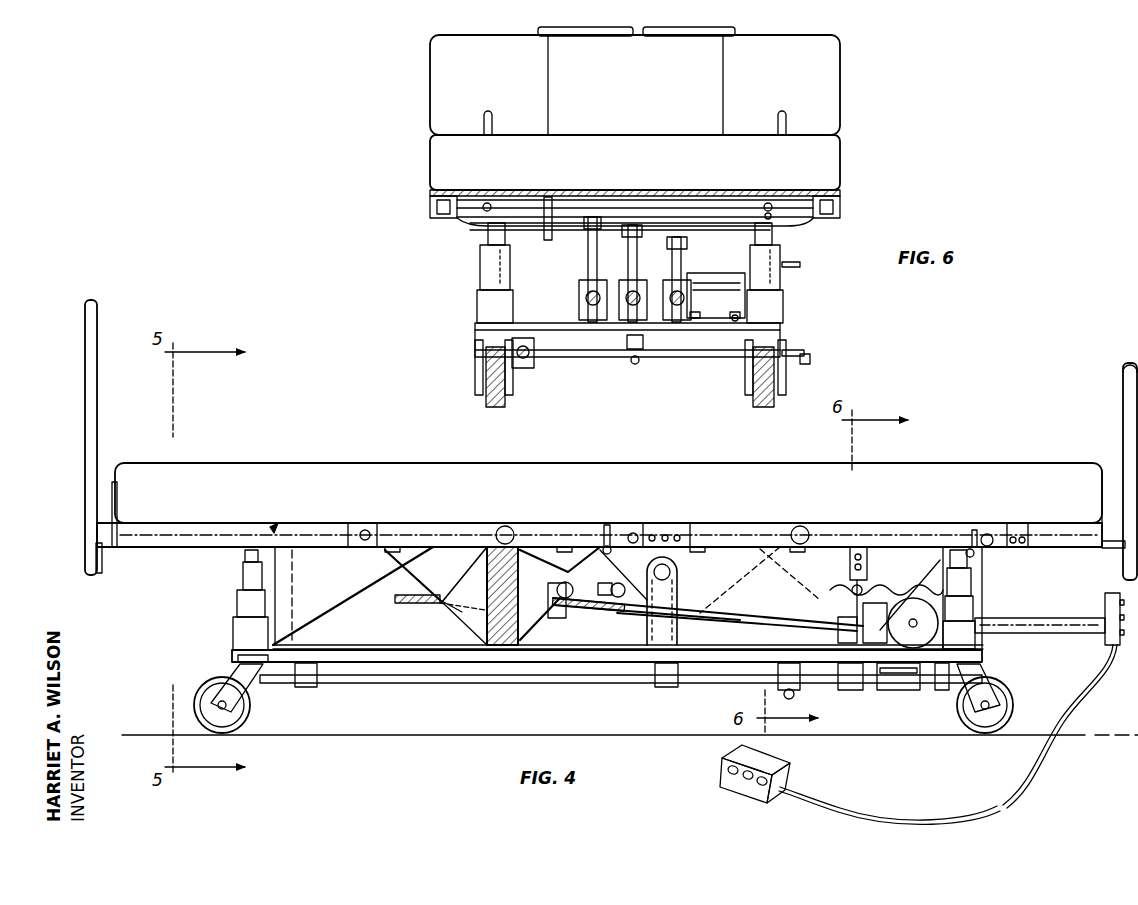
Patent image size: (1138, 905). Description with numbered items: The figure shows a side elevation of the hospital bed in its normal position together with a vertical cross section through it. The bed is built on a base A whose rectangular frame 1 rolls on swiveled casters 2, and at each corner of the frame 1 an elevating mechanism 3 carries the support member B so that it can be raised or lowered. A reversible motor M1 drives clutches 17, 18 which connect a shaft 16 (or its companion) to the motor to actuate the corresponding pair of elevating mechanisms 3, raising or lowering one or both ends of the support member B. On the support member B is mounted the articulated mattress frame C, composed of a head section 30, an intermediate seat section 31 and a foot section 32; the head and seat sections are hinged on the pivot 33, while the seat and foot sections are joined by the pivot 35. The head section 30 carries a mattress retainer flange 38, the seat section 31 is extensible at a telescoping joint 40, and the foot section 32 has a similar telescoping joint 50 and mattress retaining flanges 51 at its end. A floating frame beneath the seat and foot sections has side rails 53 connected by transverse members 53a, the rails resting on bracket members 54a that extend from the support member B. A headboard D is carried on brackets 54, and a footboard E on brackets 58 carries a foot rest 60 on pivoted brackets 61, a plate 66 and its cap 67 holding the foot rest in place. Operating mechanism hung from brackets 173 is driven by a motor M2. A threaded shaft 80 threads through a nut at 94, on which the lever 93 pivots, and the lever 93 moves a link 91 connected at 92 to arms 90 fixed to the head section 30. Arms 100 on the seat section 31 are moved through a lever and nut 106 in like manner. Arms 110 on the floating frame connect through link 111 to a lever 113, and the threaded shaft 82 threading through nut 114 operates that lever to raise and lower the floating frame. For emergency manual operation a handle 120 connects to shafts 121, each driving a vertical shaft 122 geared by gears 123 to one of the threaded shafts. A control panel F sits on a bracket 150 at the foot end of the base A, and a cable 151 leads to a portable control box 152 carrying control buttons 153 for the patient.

In FIG. 4, the rectangular frame 1 is at (396, 652).
In FIG. 4, the swiveled casters 2 is at (250, 704).
In FIG. 6, the elevating mechanisms 3 is at (470, 268).
In FIG. 4, the elevating mechanisms 3 is at (618, 600).
In FIG. 4, the shaft 16 is at (626, 680).
In FIG. 4, the clutch 17 is at (907, 692).
In FIG. 4, the clutch 18 is at (845, 691).
In FIG. 4, the head section 30 is at (140, 530).
In FIG. 4, the intermediate seat section 31 is at (565, 522).
In FIG. 4, the foot section 32 is at (858, 520).
In FIG. 4, the pivot 33 is at (510, 524).
In FIG. 4, the pivot 35 is at (800, 524).
In FIG. 4, the mattress retainer flange 38 is at (110, 470).
In FIG. 4, the telescoping joint 40 is at (660, 530).
In FIG. 4, the telescoping joint 50 is at (1016, 524).
In FIG. 6, the mattress retaining flanges 51 is at (428, 160).
In FIG. 4, the mattress retaining flanges 51 is at (1104, 482).
In FIG. 6, the side rails 53 is at (838, 205).
In FIG. 6, the transverse members 53a is at (613, 205).
In FIG. 4, the brackets 54 is at (128, 553).
In FIG. 6, the bracket members 54a is at (770, 212).
In FIG. 4, the brackets 58 is at (1106, 560).
In FIG. 6, the foot rest 60 is at (706, 73).
In FIG. 6, the pivoted brackets 61 is at (715, 30).
In FIG. 4, the plate 66 is at (1124, 406).
In FIG. 4, the footboard cap 67 is at (1124, 388).
In FIG. 4, the threaded shaft 80 is at (592, 620).
In FIG. 4, the threaded shaft 82 is at (706, 608).
In FIG. 4, the arms 90 is at (353, 596).
In FIG. 4, the link 91 is at (440, 604).
In FIG. 4, the connection point 92 is at (516, 596).
In FIG. 4, the lever 93 is at (557, 615).
In FIG. 4, the pivot and nut 94 is at (564, 606).
In FIG. 4, the arms 100 is at (634, 530).
In FIG. 4, the nut 106 is at (424, 622).
In FIG. 6, the arms 110 is at (548, 235).
In FIG. 4, the arms 110 is at (928, 522).
In FIG. 4, the link 111 is at (712, 628).
In FIG. 4, the lever 113 is at (630, 592).
In FIG. 4, the nut 114 is at (612, 586).
In FIG. 6, the handle 120 is at (800, 259).
In FIG. 4, the handle 120 is at (848, 582).
In FIG. 6, the shafts 121 is at (688, 248).
In FIG. 6, the vertical shaft 122 is at (632, 260).
In FIG. 4, the vertical shaft 122 is at (845, 578).
In FIG. 6, the gears 123 is at (580, 295).
In FIG. 4, the gears 123 is at (838, 632).
In FIG. 4, the bracket 150 is at (1076, 632).
In FIG. 4, the cable 151 is at (1088, 682).
In FIG. 4, the portable control box 152 is at (790, 762).
In FIG. 4, the control buttons 153 is at (718, 782).
In FIG. 4, the brackets 173 is at (480, 625).
In FIG. 4, the base A is at (228, 656).
In FIG. 4, the support member B is at (215, 550).
In FIG. 4, the mattress frame C is at (266, 518).
In FIG. 4, the headboard D is at (82, 388).
In FIG. 6, the footboard E is at (850, 104).
In FIG. 4, the control panel F is at (1120, 628).
In FIG. 4, the motor M1 is at (913, 694).
In FIG. 6, the motor M2 is at (745, 301).
In FIG. 4, the motor M2 is at (922, 614).